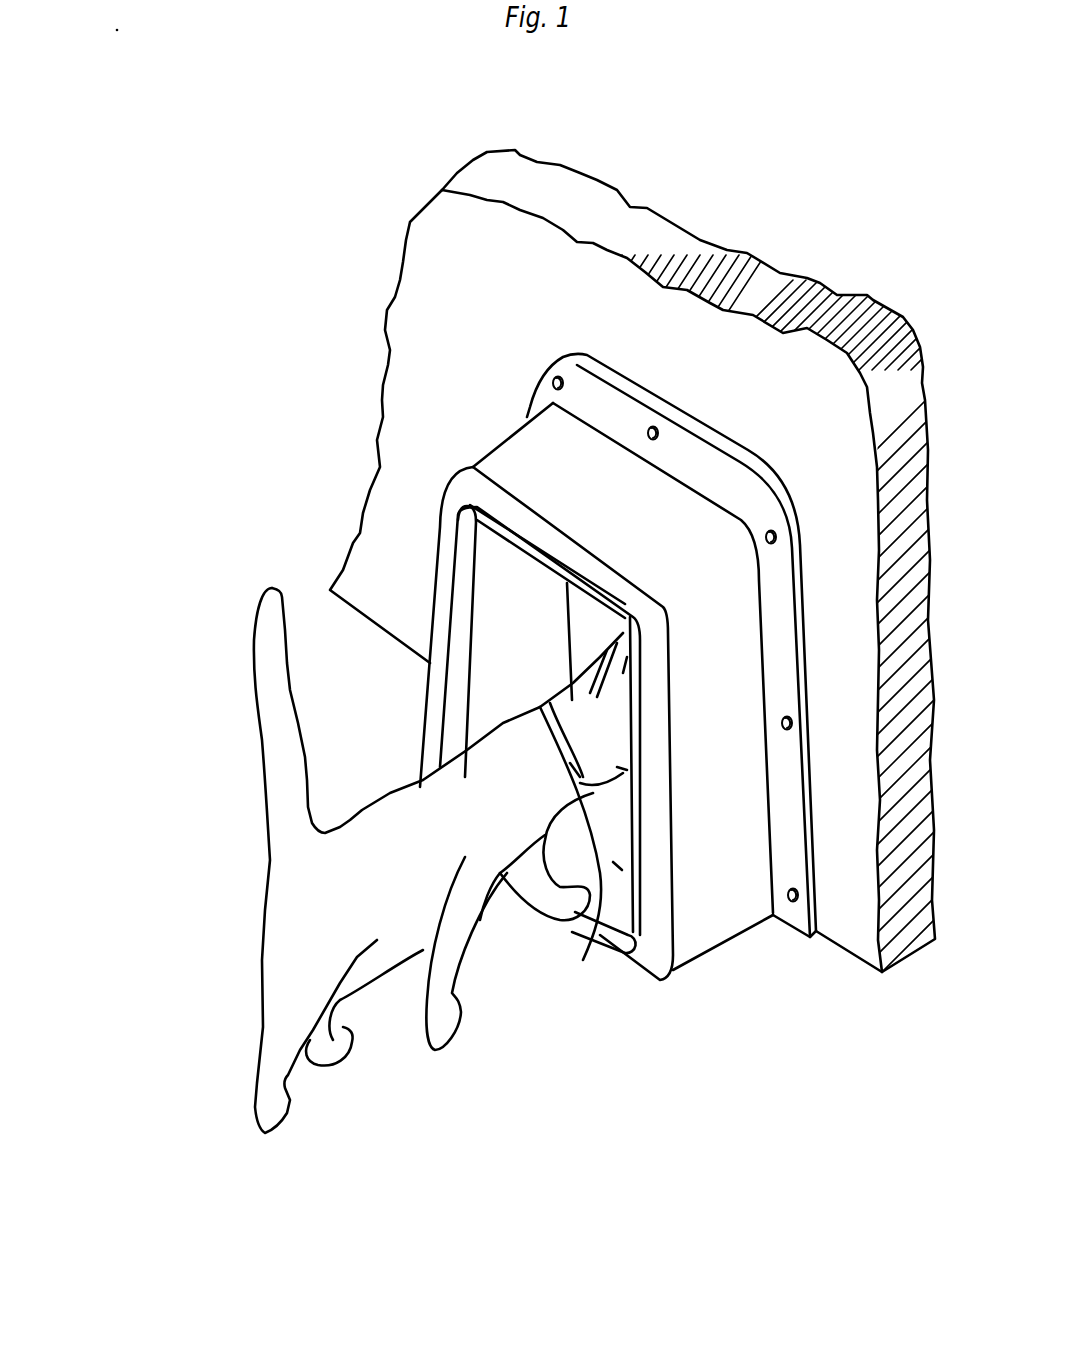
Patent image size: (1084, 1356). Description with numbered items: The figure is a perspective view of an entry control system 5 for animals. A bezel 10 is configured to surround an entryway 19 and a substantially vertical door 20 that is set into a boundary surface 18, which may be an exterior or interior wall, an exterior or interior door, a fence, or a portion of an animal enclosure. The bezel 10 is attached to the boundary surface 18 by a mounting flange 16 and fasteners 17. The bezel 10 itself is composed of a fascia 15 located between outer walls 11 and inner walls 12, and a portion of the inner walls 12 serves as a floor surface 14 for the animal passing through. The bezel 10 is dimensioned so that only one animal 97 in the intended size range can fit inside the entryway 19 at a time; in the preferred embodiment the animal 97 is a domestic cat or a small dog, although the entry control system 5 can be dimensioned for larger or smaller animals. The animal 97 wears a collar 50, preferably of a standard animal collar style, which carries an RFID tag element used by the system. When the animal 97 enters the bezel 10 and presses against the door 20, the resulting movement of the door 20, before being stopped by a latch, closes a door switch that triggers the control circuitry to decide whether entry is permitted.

The entry control system 5 is at (443, 452).
The bezel 10 is at (722, 860).
The outer walls 11 is at (714, 757).
The inner walls 12 is at (490, 660).
The floor surface 14 is at (615, 867).
The fascia 15 is at (663, 928).
The mounting flange 16 is at (727, 493).
The fasteners 17 is at (650, 430).
The boundary surface 18 is at (443, 267).
The entryway 19 is at (530, 583).
The door 20 is at (587, 638).
The collar 50 is at (583, 960).
The animal 97 is at (403, 880).